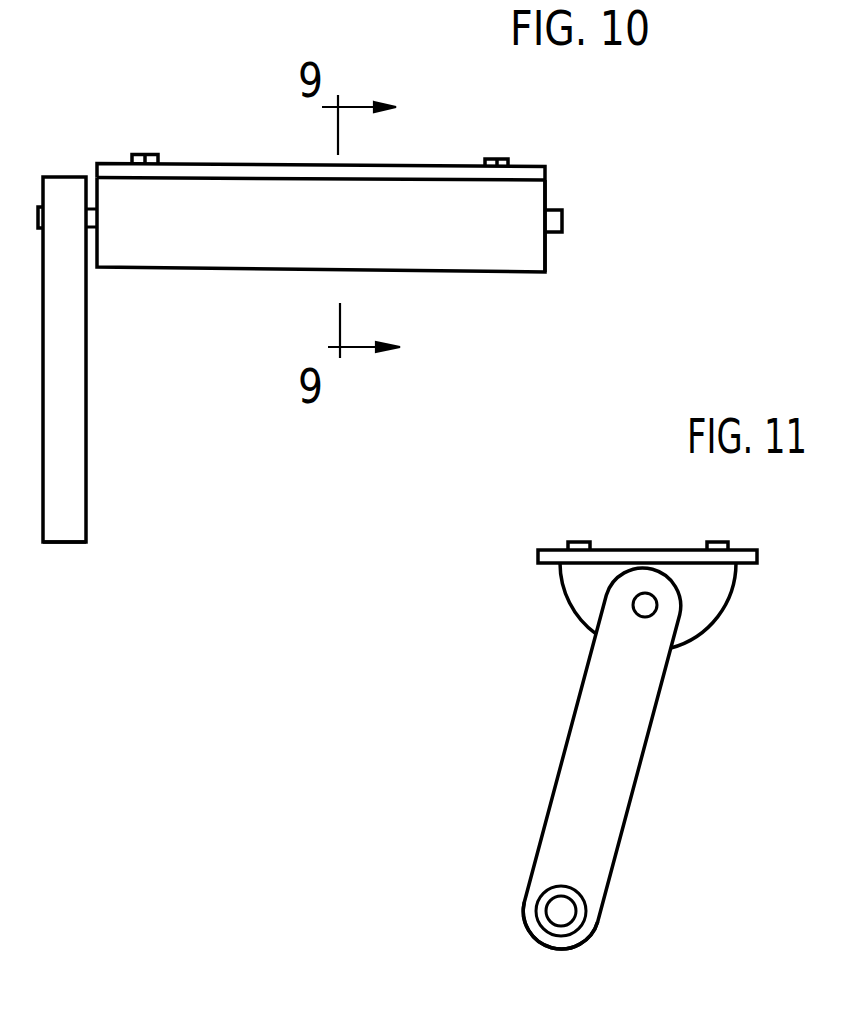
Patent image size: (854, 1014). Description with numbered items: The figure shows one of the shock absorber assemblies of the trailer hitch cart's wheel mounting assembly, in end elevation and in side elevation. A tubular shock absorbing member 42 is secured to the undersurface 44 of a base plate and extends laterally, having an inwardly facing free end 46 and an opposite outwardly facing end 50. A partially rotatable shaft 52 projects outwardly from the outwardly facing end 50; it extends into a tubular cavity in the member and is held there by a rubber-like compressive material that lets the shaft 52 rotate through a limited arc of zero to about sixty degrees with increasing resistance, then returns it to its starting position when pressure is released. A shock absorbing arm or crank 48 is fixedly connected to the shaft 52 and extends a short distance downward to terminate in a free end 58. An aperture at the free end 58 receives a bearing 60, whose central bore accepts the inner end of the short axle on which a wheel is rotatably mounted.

In FIG. 10, the tubular shock absorbing member 42 is at (508, 273).
In FIG. 11, the tubular shock absorbing member 42 is at (707, 632).
In FIG. 10, the undersurface 44 is at (527, 166).
In FIG. 11, the undersurface 44 is at (680, 549).
In FIG. 10, the inwardly facing free end 46 is at (547, 257).
In FIG. 10, the shock absorbing arm or crank 48 is at (45, 540).
In FIG. 11, the shock absorbing arm or crank 48 is at (573, 717).
In FIG. 10, the outwardly facing end 50 is at (96, 179).
In FIG. 10, the partially rotatable shaft 52 is at (562, 220).
In FIG. 11, the partially rotatable shaft 52 is at (634, 608).
In FIG. 10, the free end 58 is at (72, 543).
In FIG. 11, the free end 58 is at (532, 935).
In FIG. 11, the bearing 60 is at (540, 898).